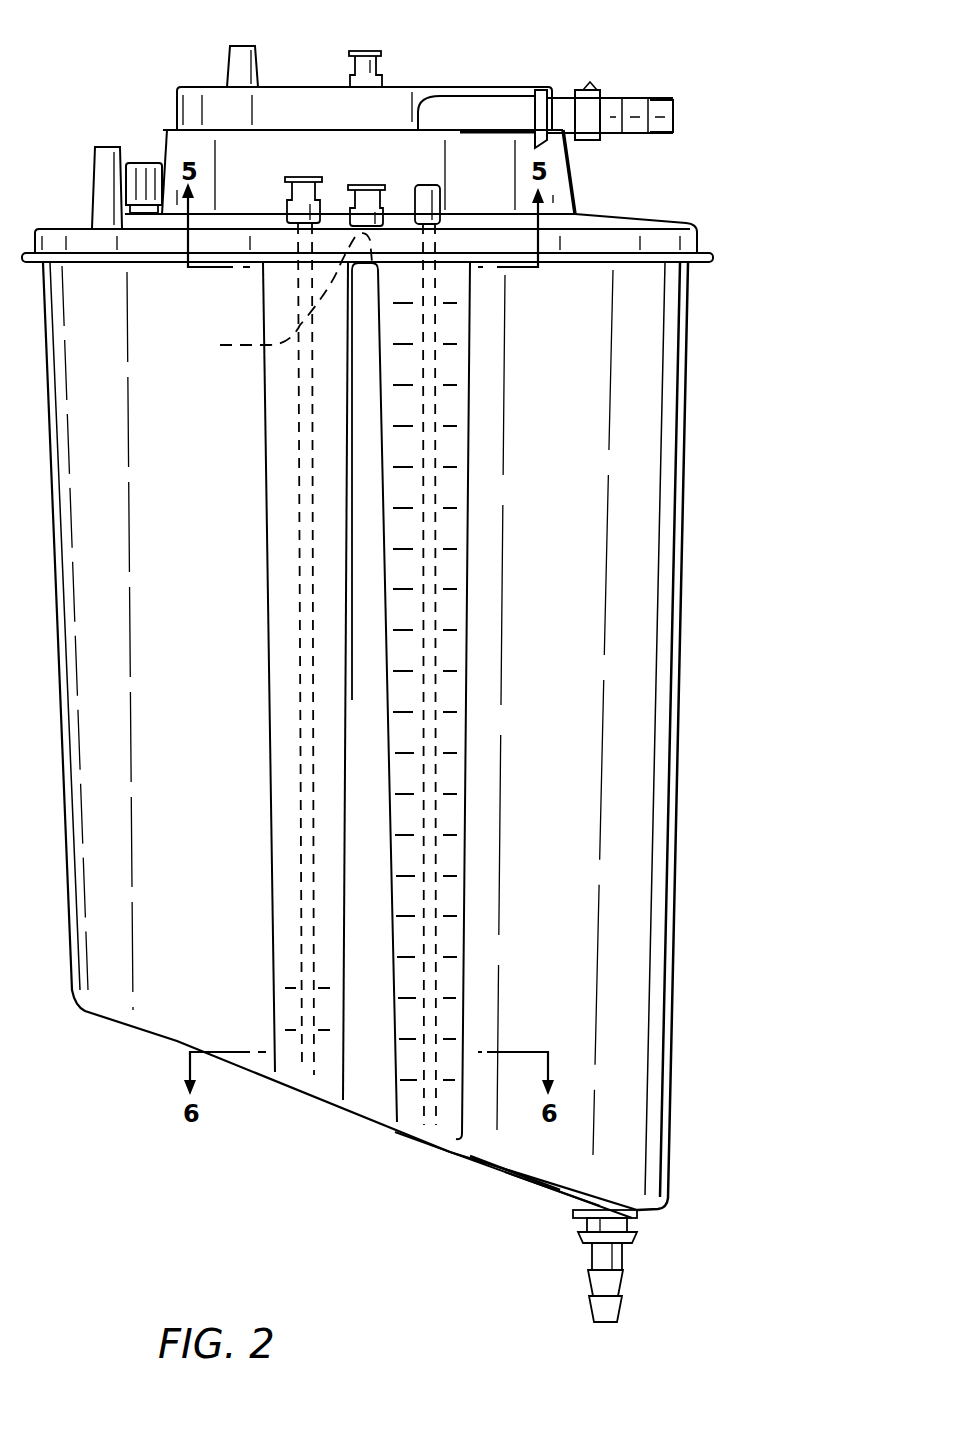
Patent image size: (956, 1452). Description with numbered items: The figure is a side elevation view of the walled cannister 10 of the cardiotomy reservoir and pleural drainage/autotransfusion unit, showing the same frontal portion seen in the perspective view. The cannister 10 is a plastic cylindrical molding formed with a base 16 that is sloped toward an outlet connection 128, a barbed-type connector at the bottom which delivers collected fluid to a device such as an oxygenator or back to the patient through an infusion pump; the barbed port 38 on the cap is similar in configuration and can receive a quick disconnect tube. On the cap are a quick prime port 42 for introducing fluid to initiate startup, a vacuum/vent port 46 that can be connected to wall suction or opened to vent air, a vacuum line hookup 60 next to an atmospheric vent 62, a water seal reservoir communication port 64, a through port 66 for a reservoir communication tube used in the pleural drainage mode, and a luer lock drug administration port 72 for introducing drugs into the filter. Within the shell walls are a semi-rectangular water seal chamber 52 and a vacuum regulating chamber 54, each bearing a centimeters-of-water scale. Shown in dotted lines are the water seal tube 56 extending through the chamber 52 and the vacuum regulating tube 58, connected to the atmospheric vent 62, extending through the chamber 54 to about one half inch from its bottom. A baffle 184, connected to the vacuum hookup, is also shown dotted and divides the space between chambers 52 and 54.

The walled cannister 10 is at (694, 732).
The base 16 is at (520, 1188).
The port 38 is at (642, 97).
The quick prime port 42 is at (258, 58).
The vacuum/vent port 46 is at (90, 205).
The water seal chamber 52 is at (275, 503).
The vacuum regulating chamber 54 is at (463, 503).
The water seal tube 56 is at (298, 415).
The vacuum regulating tube 58 is at (470, 400).
The vacuum line hookup 60 is at (357, 183).
The atmospheric vent 62 is at (440, 200).
The water seal reservoir communication port 64 is at (292, 190).
The through port 66 is at (145, 157).
The luer lock drug administration port 72 is at (383, 63).
The outlet connection 128 is at (625, 1305).
The baffle 184 is at (270, 294).